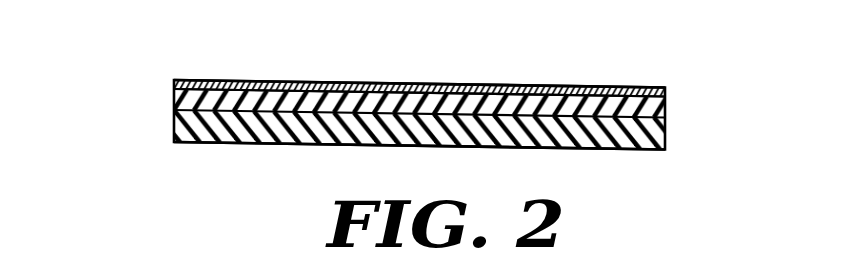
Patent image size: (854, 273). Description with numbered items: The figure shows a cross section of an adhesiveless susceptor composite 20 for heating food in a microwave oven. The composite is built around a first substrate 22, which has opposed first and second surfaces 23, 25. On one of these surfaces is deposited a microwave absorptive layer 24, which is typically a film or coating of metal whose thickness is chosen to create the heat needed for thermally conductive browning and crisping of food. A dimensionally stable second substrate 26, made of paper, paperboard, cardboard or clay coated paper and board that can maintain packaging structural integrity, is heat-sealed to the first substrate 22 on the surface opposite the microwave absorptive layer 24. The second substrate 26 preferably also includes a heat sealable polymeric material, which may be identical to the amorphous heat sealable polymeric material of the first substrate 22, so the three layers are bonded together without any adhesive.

The adhesiveless susceptor composite 20 is at (118, 58).
The first substrate 22 is at (660, 106).
The first surface 23 is at (174, 92).
The microwave absorptive layer 24 is at (666, 92).
The second surface 25 is at (174, 100).
The dimensionally stable second substrate 26 is at (660, 133).